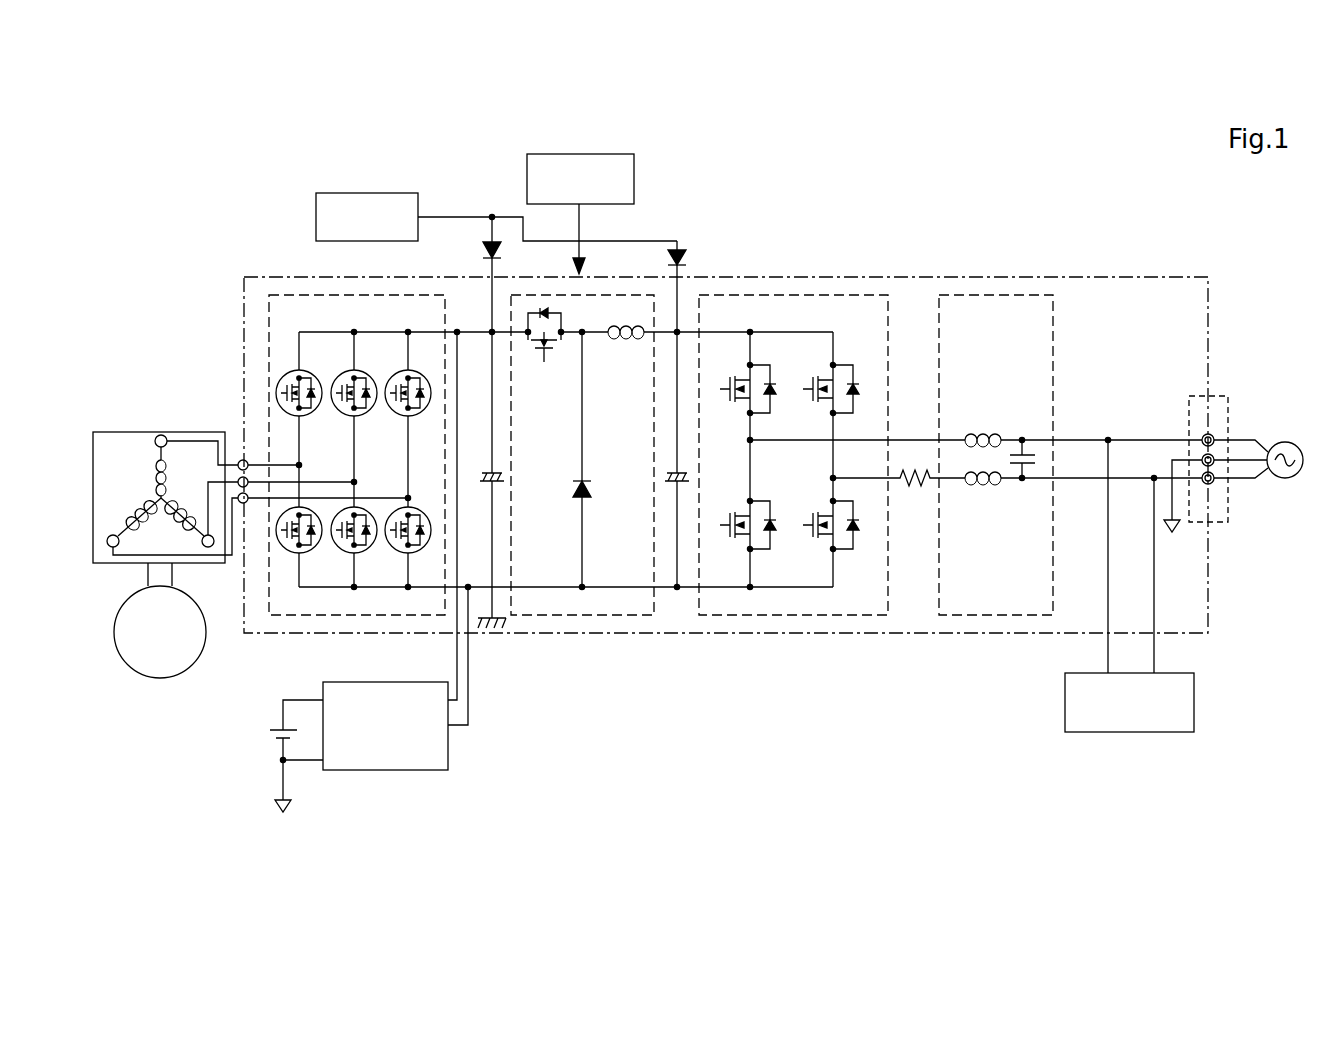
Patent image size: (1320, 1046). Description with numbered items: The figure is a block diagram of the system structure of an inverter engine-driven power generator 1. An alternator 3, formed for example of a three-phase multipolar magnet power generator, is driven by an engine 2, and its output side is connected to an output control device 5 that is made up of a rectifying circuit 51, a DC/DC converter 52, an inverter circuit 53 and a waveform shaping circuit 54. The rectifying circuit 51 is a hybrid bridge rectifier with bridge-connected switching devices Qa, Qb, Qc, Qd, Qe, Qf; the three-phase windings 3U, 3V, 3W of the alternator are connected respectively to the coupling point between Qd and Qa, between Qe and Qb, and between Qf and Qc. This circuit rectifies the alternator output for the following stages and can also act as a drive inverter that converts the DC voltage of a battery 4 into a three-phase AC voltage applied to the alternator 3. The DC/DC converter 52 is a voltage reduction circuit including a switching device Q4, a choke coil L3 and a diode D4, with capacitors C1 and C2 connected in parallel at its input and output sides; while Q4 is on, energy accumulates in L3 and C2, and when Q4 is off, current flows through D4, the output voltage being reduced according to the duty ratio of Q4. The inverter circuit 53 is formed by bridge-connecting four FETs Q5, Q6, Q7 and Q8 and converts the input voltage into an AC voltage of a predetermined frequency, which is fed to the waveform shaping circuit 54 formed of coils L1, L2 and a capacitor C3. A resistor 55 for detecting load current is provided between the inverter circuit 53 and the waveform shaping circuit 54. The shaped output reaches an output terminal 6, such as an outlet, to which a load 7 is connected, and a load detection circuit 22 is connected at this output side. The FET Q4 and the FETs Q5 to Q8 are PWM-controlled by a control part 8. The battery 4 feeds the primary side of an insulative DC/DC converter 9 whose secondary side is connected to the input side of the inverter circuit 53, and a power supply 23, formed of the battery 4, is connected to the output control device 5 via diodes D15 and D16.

The inverter engine-driven power generator 1 is at (731, 203).
The engine 2 is at (160, 678).
The alternator 3 is at (157, 462).
The 3-phase winding 3U is at (165, 470).
The 3-phase winding 3V is at (192, 512).
The 3-phase winding 3W is at (130, 512).
The battery 4 is at (270, 732).
The output control device 5 is at (907, 272).
The output terminal 6 is at (1220, 396).
The load 7 is at (1284, 478).
The control part 8 is at (562, 154).
The insulative DC/DC converter 9 is at (385, 770).
The load detection circuit 22 is at (1135, 732).
The power supply 23 is at (337, 193).
The rectifying circuit 51 is at (551, 483).
The DC/DC converter 52 is at (605, 484).
The inverter circuit 53 is at (793, 484).
The waveform shaping circuit 54 is at (976, 493).
The resistor 55 is at (914, 490).
The switching device (FET) Qa is at (316, 549).
The switching device (FET) Qb is at (371, 549).
The switching device (FET) Qc is at (425, 549).
The switching device (FET) Qd is at (316, 412).
The switching device (FET) Qe is at (371, 412).
The switching device (FET) Qf is at (425, 412).
The switching device (FET) Q4 is at (534, 365).
The FET Q5 is at (776, 397).
The FET Q6 is at (859, 397).
The FET Q7 is at (776, 540).
The FET Q8 is at (859, 540).
The capacitor C1 is at (476, 476).
The capacitor C2 is at (690, 480).
The capacitor C3 is at (1036, 455).
The diode D4 is at (578, 498).
The diode D15 is at (478, 252).
The diode D16 is at (690, 257).
The coil L1 is at (983, 432).
The coil L2 is at (980, 485).
The choke coil L3 is at (622, 345).